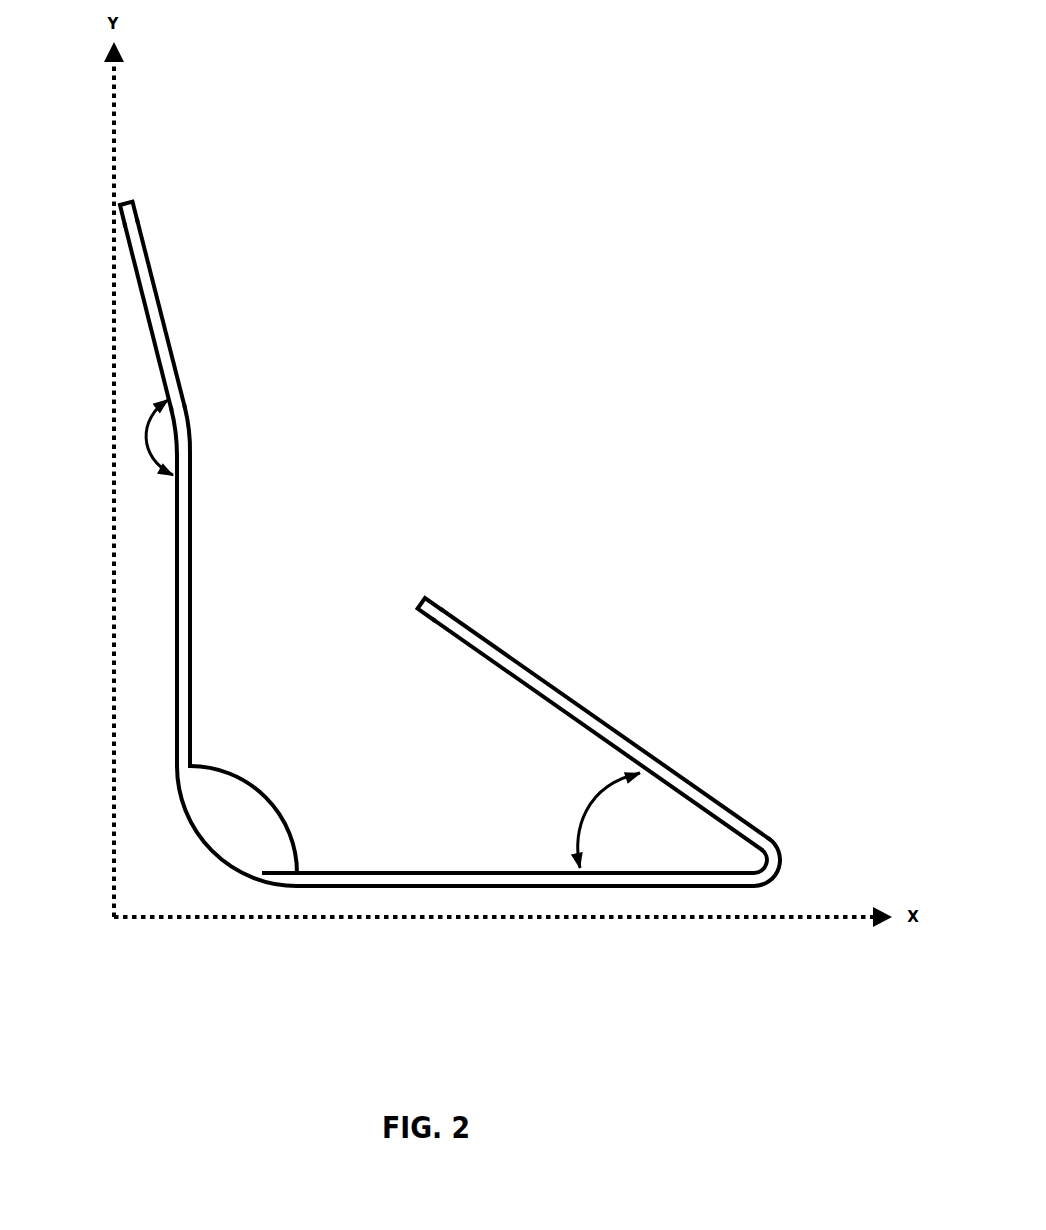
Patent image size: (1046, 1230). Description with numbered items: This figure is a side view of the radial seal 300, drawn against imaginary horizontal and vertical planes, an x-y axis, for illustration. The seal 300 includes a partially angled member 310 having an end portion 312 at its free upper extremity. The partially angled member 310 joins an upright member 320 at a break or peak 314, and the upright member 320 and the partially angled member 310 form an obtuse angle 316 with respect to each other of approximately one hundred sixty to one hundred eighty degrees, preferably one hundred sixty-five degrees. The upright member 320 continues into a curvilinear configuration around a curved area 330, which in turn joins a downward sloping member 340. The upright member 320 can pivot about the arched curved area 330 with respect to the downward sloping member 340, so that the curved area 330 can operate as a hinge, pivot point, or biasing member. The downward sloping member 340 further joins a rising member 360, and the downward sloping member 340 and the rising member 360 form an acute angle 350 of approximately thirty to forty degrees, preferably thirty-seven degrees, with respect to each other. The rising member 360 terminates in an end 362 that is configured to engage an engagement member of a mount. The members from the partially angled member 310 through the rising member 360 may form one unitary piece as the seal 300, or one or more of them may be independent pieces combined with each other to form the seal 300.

The radial seal 300 is at (596, 313).
The partially angled member 310 is at (167, 332).
The end portion 312 is at (160, 198).
The break or peak 314 is at (223, 440).
The obtuse angle 316 is at (147, 437).
The upright member 320 is at (190, 608).
The curved area 330 is at (225, 808).
The downward sloping member 340 is at (357, 886).
The acute angle 350 is at (594, 820).
The rising member 360 is at (567, 698).
The end 362 is at (449, 594).